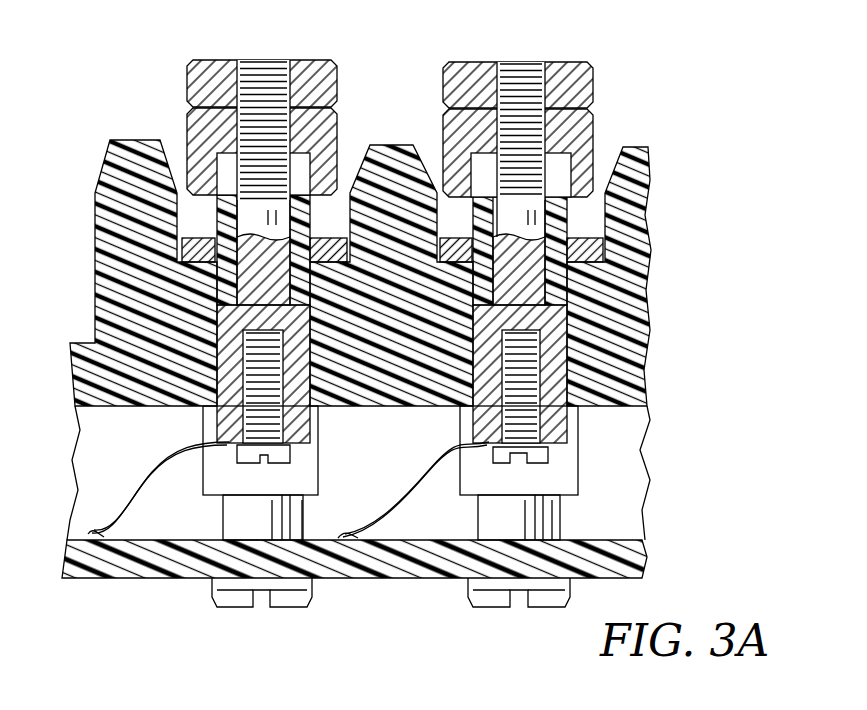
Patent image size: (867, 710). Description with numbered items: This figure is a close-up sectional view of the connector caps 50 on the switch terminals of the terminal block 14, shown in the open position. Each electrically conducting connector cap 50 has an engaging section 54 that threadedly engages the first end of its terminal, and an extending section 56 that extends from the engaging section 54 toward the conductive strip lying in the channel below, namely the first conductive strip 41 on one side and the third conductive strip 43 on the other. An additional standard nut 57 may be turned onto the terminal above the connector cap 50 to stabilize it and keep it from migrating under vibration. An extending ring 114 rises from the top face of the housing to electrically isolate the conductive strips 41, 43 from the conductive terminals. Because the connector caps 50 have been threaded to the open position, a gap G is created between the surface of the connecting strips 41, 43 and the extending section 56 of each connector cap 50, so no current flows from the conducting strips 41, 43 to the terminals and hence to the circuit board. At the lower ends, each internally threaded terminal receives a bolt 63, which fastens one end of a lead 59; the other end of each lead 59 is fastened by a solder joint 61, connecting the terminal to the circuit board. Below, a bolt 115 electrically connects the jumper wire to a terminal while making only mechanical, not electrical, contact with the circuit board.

The connector cap 50 is at (430, 57).
The standard nut 57 is at (443, 87).
The engaging section 54 is at (197, 120).
The extending section 56 is at (443, 180).
The terminal block 14 is at (128, 135).
The extending ring 114 is at (217, 205).
The gap G is at (197, 203).
The third conductive strip 43 is at (190, 250).
The first conductive strip 41 is at (603, 250).
The lead 59 is at (153, 462).
The solder joint 61 is at (93, 530).
The bolt 63 is at (296, 450).
The bolt 115 is at (225, 587).